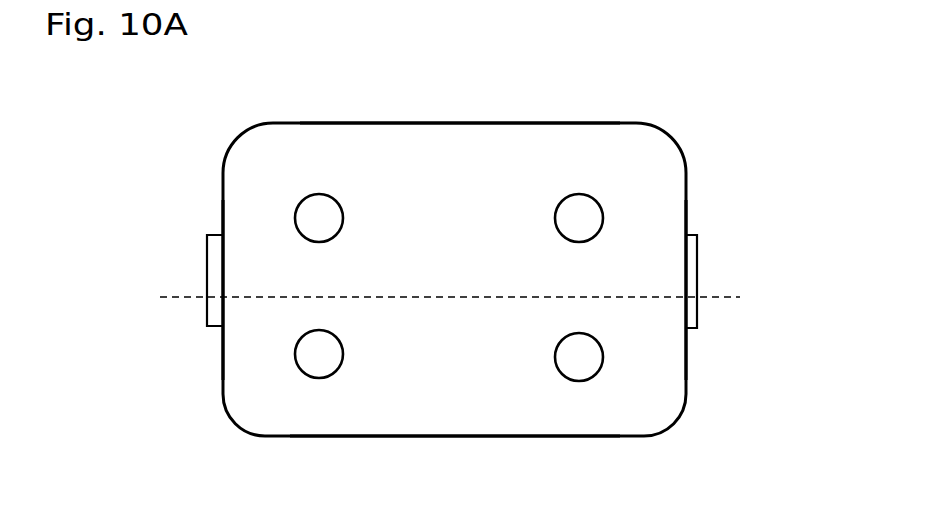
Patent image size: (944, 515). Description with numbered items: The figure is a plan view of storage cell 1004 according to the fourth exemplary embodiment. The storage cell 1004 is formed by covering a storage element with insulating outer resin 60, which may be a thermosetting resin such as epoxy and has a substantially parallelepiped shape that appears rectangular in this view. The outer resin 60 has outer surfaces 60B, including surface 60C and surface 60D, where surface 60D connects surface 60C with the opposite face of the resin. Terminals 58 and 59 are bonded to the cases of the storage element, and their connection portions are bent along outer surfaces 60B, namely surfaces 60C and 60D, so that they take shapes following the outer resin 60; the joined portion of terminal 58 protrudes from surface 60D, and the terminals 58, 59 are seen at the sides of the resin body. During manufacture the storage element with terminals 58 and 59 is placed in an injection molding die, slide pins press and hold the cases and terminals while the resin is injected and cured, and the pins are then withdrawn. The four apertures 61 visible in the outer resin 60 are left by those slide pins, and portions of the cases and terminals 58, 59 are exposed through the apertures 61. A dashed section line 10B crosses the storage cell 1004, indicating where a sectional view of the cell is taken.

The storage cell 1004 is at (758, 133).
The outer resin 60 is at (257, 152).
The surface 60C is at (627, 142).
The outer surfaces 60B is at (641, 418).
The surface 60D is at (222, 385).
The apertures 61 is at (590, 217).
The terminal 59 is at (213, 263).
The terminal 58 is at (690, 268).
The line 10B- 10B is at (450, 296).